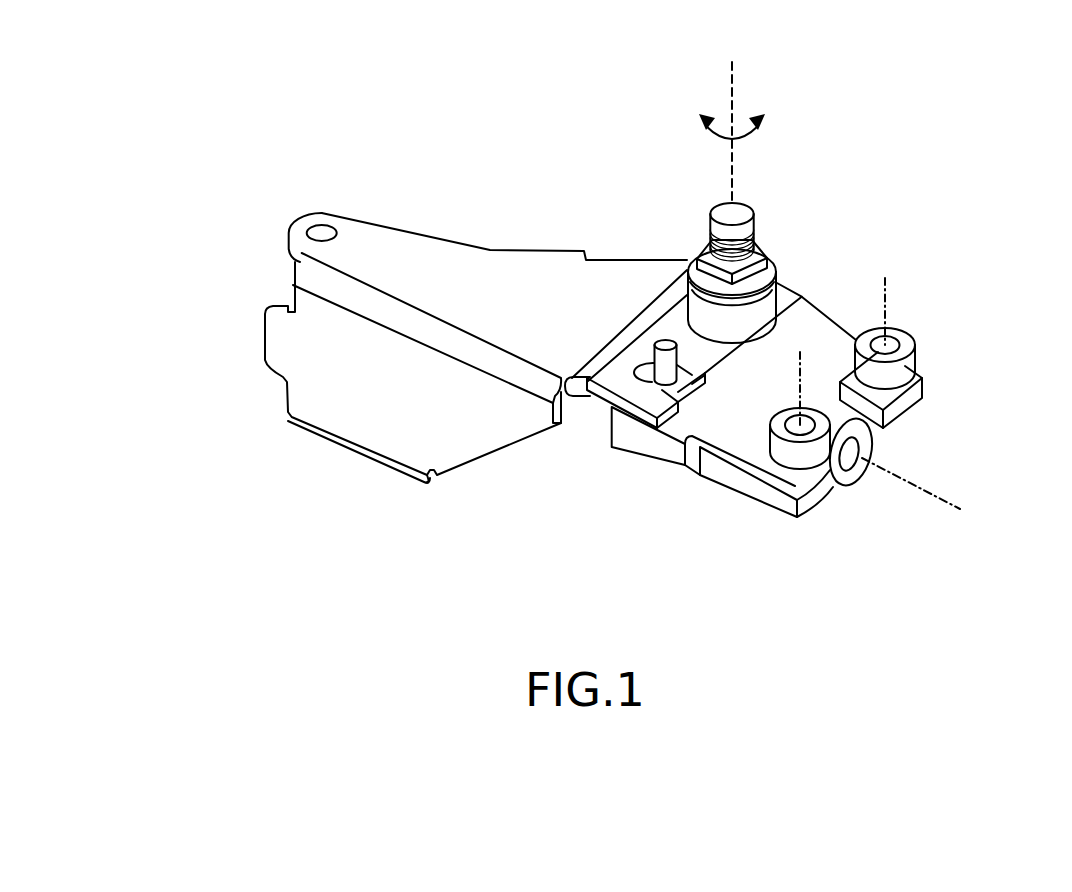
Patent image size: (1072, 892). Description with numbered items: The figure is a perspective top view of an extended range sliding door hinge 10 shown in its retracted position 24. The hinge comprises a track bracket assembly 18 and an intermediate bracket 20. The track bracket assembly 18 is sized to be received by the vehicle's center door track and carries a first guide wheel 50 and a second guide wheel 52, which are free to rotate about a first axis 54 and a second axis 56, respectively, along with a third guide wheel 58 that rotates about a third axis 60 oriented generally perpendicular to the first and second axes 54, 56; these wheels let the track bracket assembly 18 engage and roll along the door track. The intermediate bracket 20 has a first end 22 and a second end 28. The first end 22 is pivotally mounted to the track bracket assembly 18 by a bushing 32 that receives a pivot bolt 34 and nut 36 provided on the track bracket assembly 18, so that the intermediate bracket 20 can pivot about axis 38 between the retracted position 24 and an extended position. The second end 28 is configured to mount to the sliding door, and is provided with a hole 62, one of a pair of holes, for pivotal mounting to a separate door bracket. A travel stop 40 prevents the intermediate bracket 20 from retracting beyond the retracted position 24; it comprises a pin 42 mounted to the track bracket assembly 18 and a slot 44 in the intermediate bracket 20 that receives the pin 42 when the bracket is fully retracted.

The extended range sliding door hinge 10 is at (180, 158).
The track bracket assembly 18 is at (708, 486).
The intermediate bracket 20 is at (341, 447).
The first end 22 is at (800, 297).
The retracted position 24 is at (525, 476).
The second end 28 is at (405, 228).
The bushing 32 is at (690, 252).
The pivot bolt 34 is at (750, 210).
The nut 36 is at (775, 232).
The axis 38 is at (733, 83).
The travel stop 40 is at (637, 442).
The pin 42 is at (656, 338).
The slot 44 is at (692, 380).
The first guide wheel 50 is at (918, 362).
The second guide wheel 52 is at (777, 452).
The first axis 54 is at (893, 300).
The second axis 56 is at (822, 342).
The third guide wheel 58 is at (875, 440).
The third axis 60 is at (921, 495).
The hole 62 is at (325, 226).